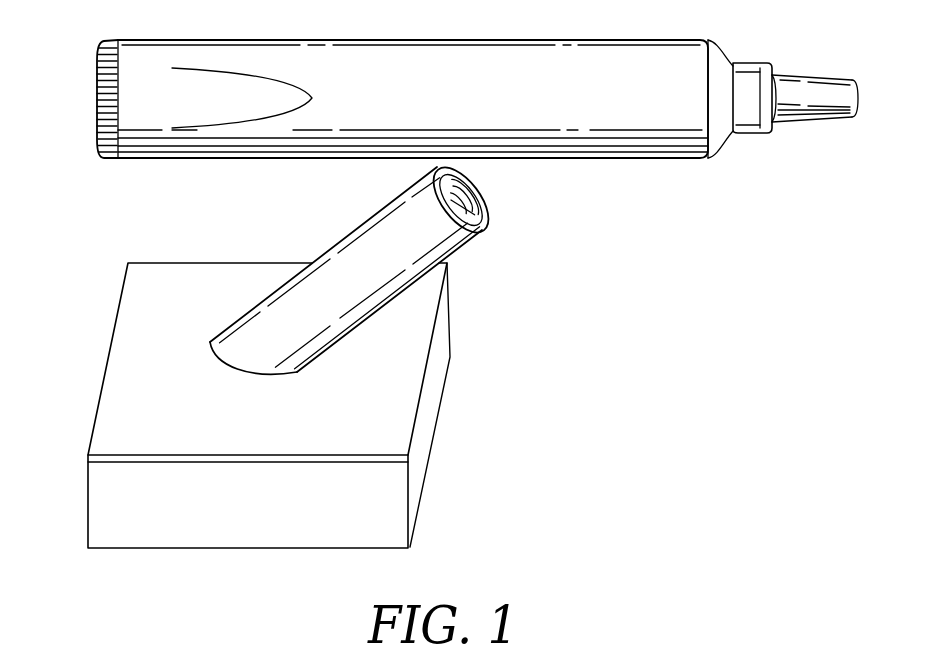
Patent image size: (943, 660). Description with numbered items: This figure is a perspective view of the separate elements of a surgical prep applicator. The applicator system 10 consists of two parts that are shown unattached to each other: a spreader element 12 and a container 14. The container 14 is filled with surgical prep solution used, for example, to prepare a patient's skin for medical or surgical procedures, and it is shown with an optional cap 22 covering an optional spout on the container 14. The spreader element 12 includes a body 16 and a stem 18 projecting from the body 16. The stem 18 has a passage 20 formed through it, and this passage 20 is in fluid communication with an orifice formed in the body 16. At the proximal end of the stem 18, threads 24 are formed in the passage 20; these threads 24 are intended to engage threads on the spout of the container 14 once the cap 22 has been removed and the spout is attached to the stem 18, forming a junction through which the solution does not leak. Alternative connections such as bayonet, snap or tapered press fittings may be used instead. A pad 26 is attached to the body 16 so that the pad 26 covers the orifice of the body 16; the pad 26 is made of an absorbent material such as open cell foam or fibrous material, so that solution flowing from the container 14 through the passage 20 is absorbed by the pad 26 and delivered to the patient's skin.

The applicator system 10 is at (735, 292).
The spreader element 12 is at (420, 413).
The container 14 is at (618, 125).
The body 16 is at (140, 393).
The stem 18 is at (272, 325).
The passage 20 is at (481, 213).
The cap 22 is at (821, 90).
The threads 24 is at (462, 186).
The pad 26 is at (190, 523).